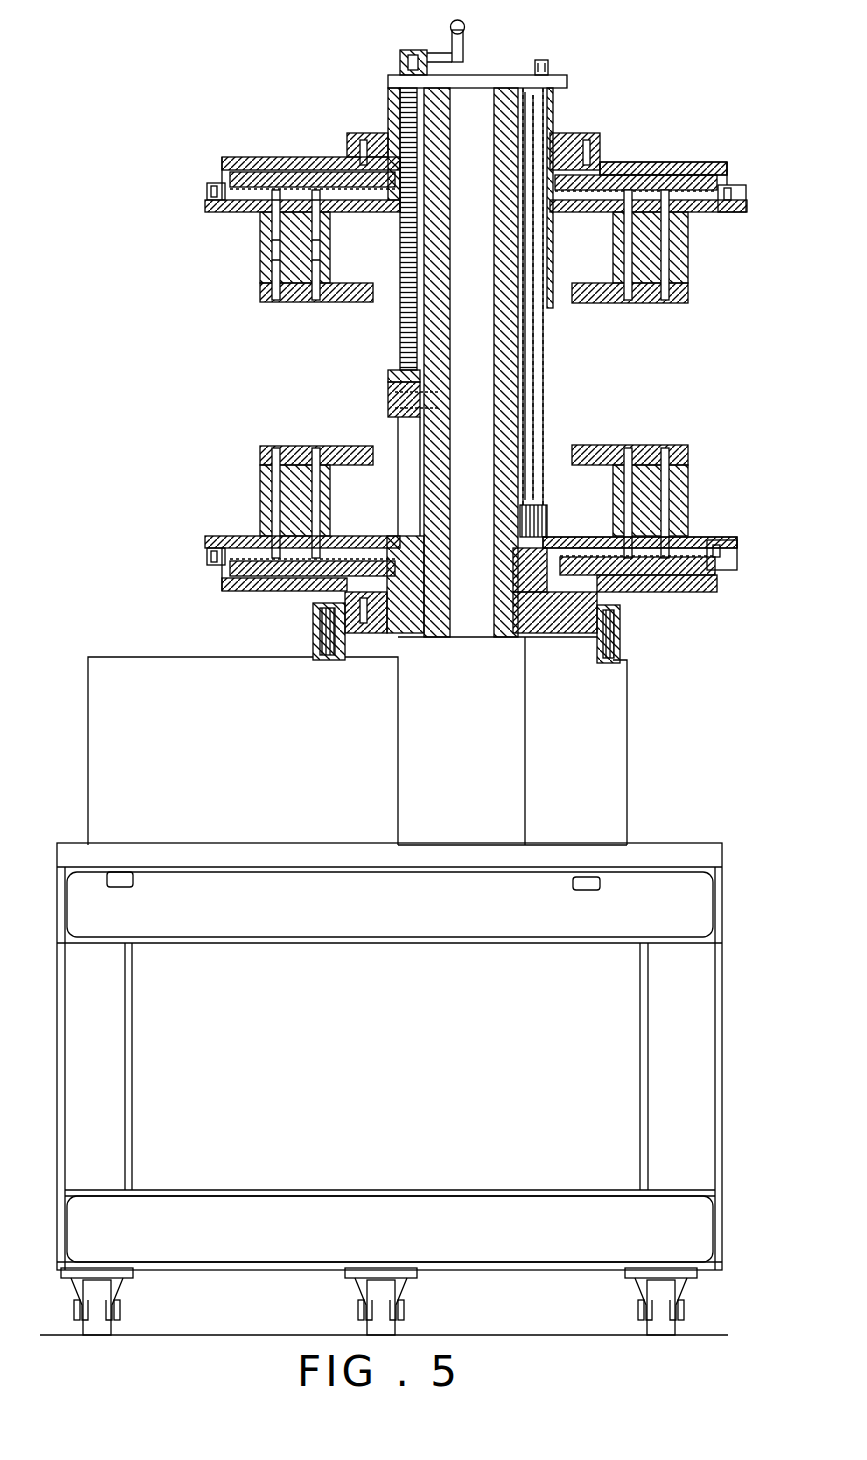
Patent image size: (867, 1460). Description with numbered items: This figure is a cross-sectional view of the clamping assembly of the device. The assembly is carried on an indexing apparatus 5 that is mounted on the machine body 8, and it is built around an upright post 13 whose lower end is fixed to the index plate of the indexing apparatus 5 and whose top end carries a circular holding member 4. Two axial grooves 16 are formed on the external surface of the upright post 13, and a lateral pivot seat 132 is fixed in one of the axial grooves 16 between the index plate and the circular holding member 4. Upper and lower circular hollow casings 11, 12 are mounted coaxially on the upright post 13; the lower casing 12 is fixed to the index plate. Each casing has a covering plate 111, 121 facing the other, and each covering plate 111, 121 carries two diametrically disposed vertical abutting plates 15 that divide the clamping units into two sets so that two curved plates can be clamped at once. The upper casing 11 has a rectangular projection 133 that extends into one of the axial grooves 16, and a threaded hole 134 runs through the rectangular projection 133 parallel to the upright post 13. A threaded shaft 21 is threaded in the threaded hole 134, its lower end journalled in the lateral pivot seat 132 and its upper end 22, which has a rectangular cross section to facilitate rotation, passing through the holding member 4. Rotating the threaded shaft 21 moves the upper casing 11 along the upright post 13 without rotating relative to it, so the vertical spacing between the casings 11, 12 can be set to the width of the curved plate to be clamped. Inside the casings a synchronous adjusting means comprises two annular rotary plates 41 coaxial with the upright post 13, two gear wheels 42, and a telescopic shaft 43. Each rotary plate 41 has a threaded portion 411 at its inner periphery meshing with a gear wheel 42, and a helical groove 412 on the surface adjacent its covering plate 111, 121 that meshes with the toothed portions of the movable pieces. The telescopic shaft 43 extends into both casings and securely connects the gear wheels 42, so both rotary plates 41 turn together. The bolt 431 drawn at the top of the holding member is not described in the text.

The circular holding member 4 is at (545, 428).
The indexing apparatus 5 is at (166, 657).
The machine body 8 is at (665, 843).
The upper circular hollow casing 11 is at (728, 170).
The lower circular hollow casing 12 is at (722, 586).
The upright post 13 is at (450, 215).
The vertical abutting plate 15 is at (690, 292).
The axial groove 16 is at (408, 433).
The threaded shaft 21 is at (405, 50).
The upper end of the threaded shaft 22 is at (467, 32).
The annular rotary plate 41 is at (663, 160).
The gear wheel 42 is at (566, 150).
The telescopic shaft 43 is at (535, 352).
The covering plate 111 is at (366, 213).
The covering plate 121 is at (375, 534).
The lateral pivot seat 132 is at (390, 380).
The rectangular projection 133 is at (395, 104).
The threaded hole 134 is at (397, 124).
The threaded portion 411 is at (515, 638).
The helical groove 412 is at (700, 537).
The bolt 431 is at (549, 65).